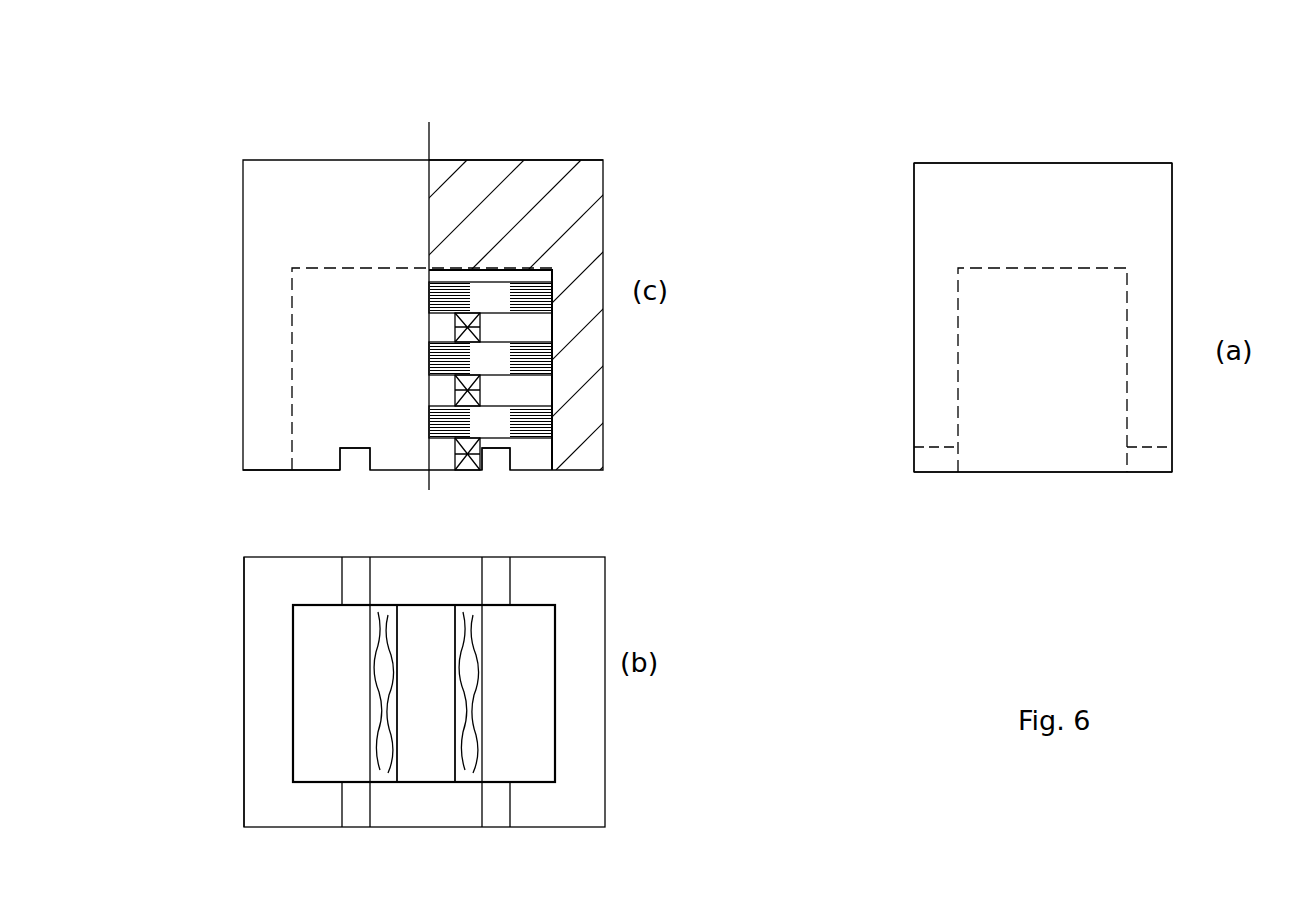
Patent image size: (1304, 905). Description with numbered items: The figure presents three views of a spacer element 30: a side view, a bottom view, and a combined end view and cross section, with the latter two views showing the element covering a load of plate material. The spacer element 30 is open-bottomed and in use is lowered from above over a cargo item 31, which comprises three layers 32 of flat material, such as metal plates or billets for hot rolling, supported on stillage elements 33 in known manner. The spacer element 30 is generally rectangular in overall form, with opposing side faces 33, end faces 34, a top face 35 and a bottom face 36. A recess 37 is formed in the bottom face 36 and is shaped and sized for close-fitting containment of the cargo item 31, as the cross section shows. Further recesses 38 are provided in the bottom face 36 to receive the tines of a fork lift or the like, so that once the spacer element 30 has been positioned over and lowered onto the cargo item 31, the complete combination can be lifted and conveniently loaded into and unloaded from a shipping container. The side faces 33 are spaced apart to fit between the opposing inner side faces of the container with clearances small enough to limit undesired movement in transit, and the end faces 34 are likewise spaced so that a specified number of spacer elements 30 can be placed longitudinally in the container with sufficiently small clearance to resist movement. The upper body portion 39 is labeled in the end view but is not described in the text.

The spacer element 30 is at (607, 178).
The cargo item 31 is at (548, 385).
The layers of flat material 32 is at (474, 526).
The side faces / stillage elements 33 is at (243, 210).
The end faces 34 is at (913, 190).
The top face 35 is at (490, 160).
The bottom face 36 is at (272, 470).
The recess 37 is at (1105, 512).
The recesses for tines 38 is at (355, 455).
The upper body portion 39 is at (362, 210).